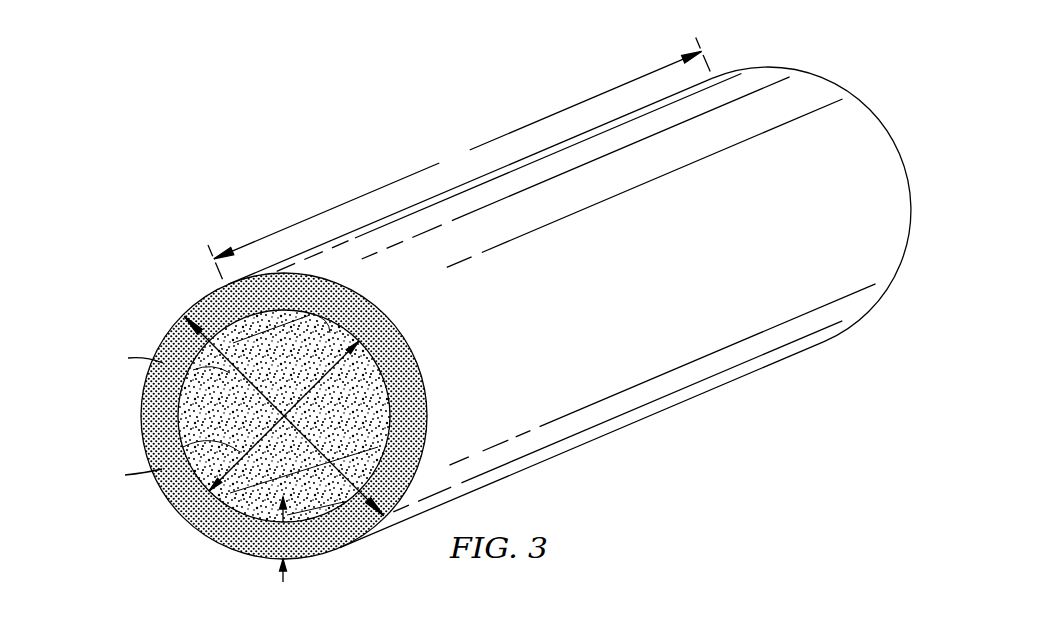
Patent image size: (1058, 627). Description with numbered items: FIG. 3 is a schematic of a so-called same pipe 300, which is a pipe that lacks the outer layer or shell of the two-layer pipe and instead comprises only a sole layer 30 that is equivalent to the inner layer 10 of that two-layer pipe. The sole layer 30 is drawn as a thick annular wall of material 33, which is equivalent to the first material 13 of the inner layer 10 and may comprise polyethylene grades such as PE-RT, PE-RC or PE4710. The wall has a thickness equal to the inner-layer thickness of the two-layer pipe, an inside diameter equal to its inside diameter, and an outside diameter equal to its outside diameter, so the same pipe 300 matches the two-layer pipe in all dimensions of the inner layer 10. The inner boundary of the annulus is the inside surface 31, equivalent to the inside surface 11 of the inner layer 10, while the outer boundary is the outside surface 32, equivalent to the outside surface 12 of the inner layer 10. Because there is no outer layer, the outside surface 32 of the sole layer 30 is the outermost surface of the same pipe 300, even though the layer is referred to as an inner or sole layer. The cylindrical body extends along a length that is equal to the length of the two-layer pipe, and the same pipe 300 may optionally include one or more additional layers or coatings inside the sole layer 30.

The same pipe 300 is at (498, 322).
The outside surface 32 is at (569, 307).
The outside surface 12 is at (695, 373).
The sole layer 30 is at (294, 442).
The inner layer 10 is at (294, 442).
The material of sole layer 33 is at (341, 416).
The first material 13 is at (403, 383).
The inside surface 31 is at (313, 416).
The inside surface 11 is at (372, 304).